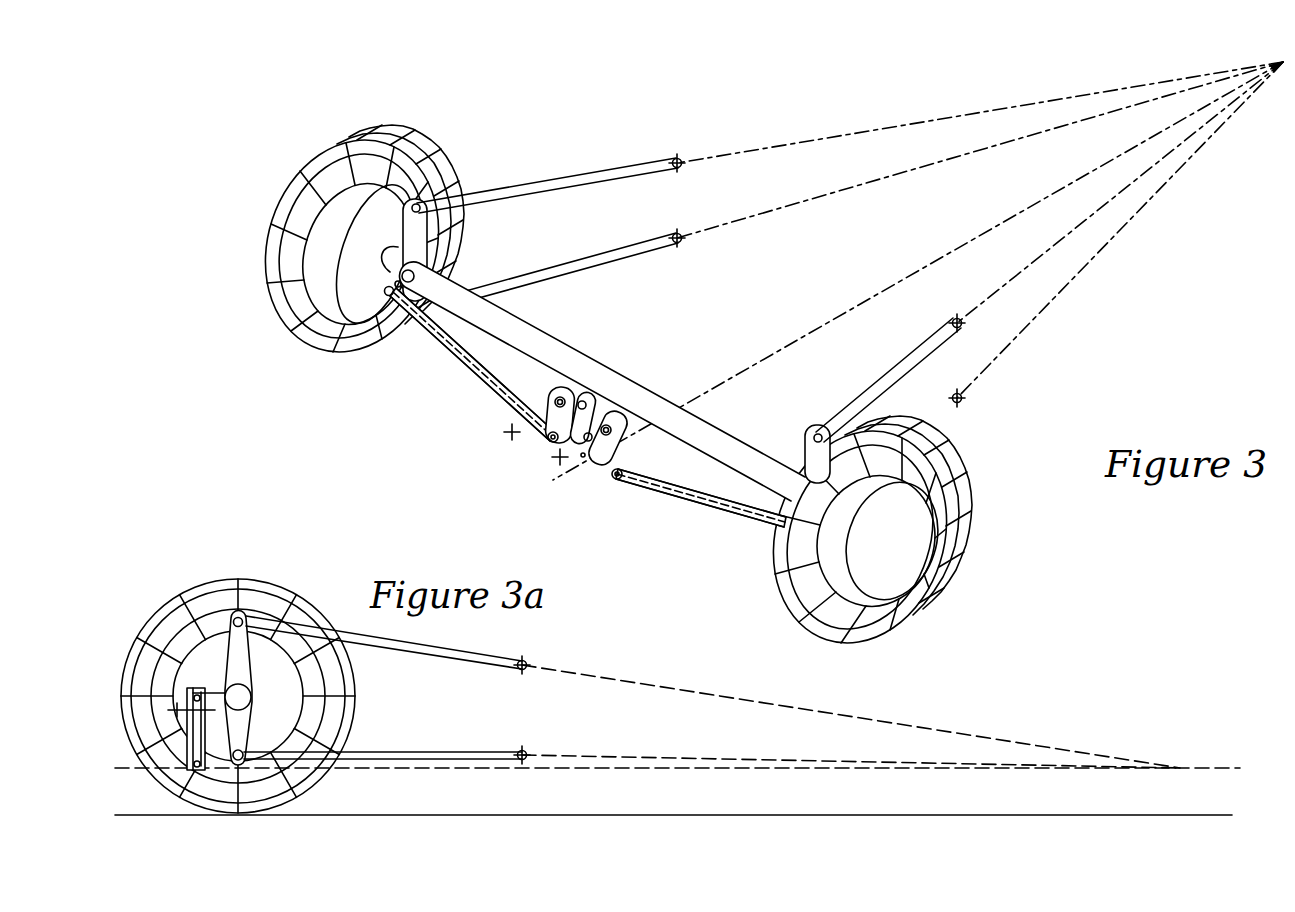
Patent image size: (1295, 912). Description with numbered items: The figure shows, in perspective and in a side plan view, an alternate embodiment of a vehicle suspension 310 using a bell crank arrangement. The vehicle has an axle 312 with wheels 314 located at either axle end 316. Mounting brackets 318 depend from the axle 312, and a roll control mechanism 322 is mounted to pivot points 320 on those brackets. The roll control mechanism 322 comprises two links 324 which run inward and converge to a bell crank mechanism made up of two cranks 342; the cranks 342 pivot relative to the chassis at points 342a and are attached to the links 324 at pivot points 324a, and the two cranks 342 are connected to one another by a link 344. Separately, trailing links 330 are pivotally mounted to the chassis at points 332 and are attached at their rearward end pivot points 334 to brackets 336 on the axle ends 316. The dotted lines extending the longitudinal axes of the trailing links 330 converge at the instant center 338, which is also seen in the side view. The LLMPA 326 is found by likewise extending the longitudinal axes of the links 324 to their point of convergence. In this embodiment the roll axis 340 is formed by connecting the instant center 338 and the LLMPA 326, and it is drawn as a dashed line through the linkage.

In FIG. 3, the suspension 310 is at (1064, 364).
In FIG. 3, the axle 312 is at (540, 339).
In FIG. 3A, the axle 312 is at (242, 700).
In FIG. 3, the wheels 314 is at (406, 140).
In FIG. 3A, the wheels 314 is at (220, 600).
In FIG. 3, the axle ends 316 is at (393, 255).
In FIG. 3, the mounting brackets 318 is at (402, 275).
In FIG. 3, the pivot points 320 is at (391, 297).
In FIG. 3, the roll control mechanism 322 is at (430, 416).
In FIG. 3, the links 324 is at (462, 352).
In FIG. 3, the pivot points 324a is at (546, 433).
In FIG. 3, the LLMPA 326 is at (583, 458).
In FIG. 3, the trailing links 330 is at (507, 193).
In FIG. 3, the chassis pivot points 332 is at (673, 168).
In FIG. 3, the rearward end pivot points 334 is at (433, 217).
In FIG. 3A, the rearward end pivot points 334 is at (246, 614).
In FIG. 3, the brackets 336 is at (427, 236).
In FIG. 3A, the brackets 336 is at (240, 652).
In FIG. 3, the instant center 338 is at (1281, 61).
In FIG. 3A, the instant center 338 is at (1183, 766).
In FIG. 3, the roll axis 340 is at (1036, 206).
In FIG. 3A, the roll axis 340 is at (693, 769).
In FIG. 3, the cranks 342 is at (556, 396).
In FIG. 3, the crank pivot points 342a is at (556, 458).
In FIG. 3, the link 344 is at (590, 405).